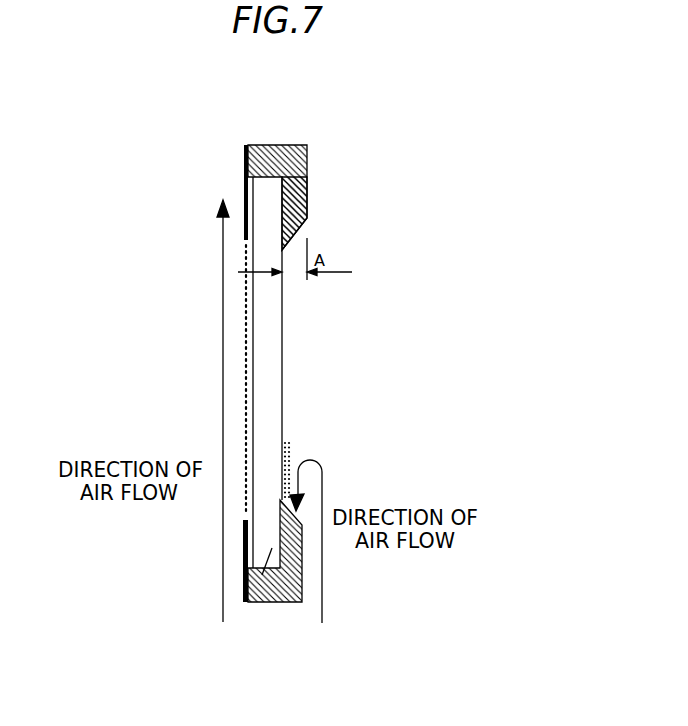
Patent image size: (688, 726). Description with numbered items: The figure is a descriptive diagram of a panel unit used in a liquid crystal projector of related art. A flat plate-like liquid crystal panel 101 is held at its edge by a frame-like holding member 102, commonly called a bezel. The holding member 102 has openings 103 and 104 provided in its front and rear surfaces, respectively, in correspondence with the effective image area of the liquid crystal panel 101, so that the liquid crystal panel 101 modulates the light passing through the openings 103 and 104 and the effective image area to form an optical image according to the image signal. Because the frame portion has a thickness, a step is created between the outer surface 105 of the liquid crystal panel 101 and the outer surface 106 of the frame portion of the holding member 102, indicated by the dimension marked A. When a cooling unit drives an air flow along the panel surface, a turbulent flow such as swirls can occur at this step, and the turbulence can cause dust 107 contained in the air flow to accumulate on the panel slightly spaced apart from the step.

The liquid crystal panel 101 is at (277, 603).
The holding member 102 is at (278, 140).
The opening 103 is at (305, 307).
The opening 104 is at (230, 363).
The outer surface of the liquid crystal panel 105 is at (287, 367).
The outer surface of the frame portion 106 is at (310, 187).
The dust 107 is at (297, 453).